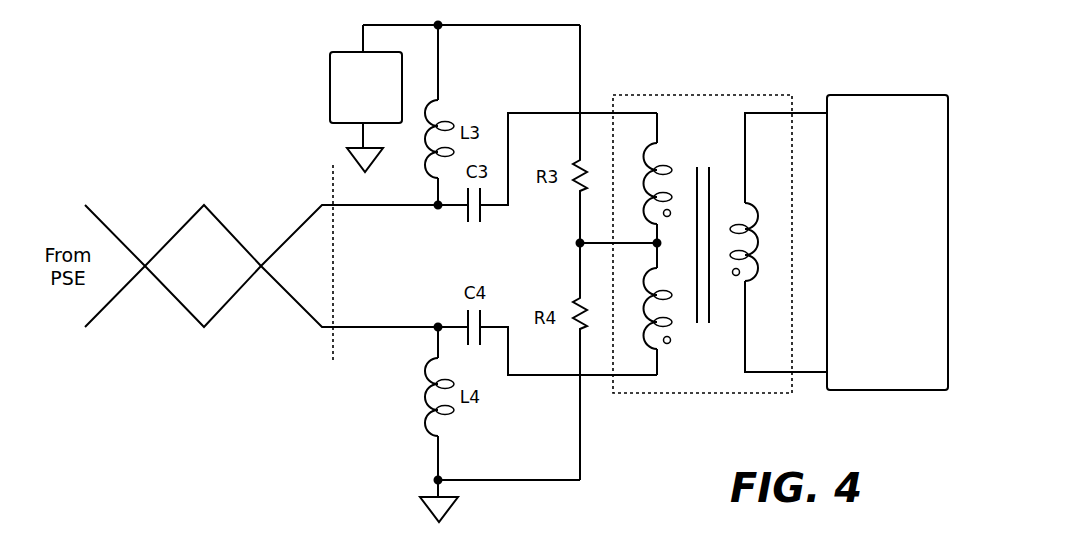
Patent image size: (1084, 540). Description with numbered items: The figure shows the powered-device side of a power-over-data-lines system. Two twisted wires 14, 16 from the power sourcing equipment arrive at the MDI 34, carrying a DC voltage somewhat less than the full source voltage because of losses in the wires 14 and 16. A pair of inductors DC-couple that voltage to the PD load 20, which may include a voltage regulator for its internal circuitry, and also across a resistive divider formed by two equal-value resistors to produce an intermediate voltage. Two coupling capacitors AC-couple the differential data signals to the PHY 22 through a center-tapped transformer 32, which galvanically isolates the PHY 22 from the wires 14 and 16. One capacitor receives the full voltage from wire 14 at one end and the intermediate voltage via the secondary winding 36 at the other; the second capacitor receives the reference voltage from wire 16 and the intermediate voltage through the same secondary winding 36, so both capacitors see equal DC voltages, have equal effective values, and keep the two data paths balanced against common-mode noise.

The wire 14 is at (293, 230).
The wire 16 is at (293, 302).
The MDI 34 is at (333, 190).
The PD load 20 is at (330, 85).
The secondary winding 36 is at (640, 135).
The center-tapped transformer 32 is at (709, 226).
The PHY 22 is at (887, 93).